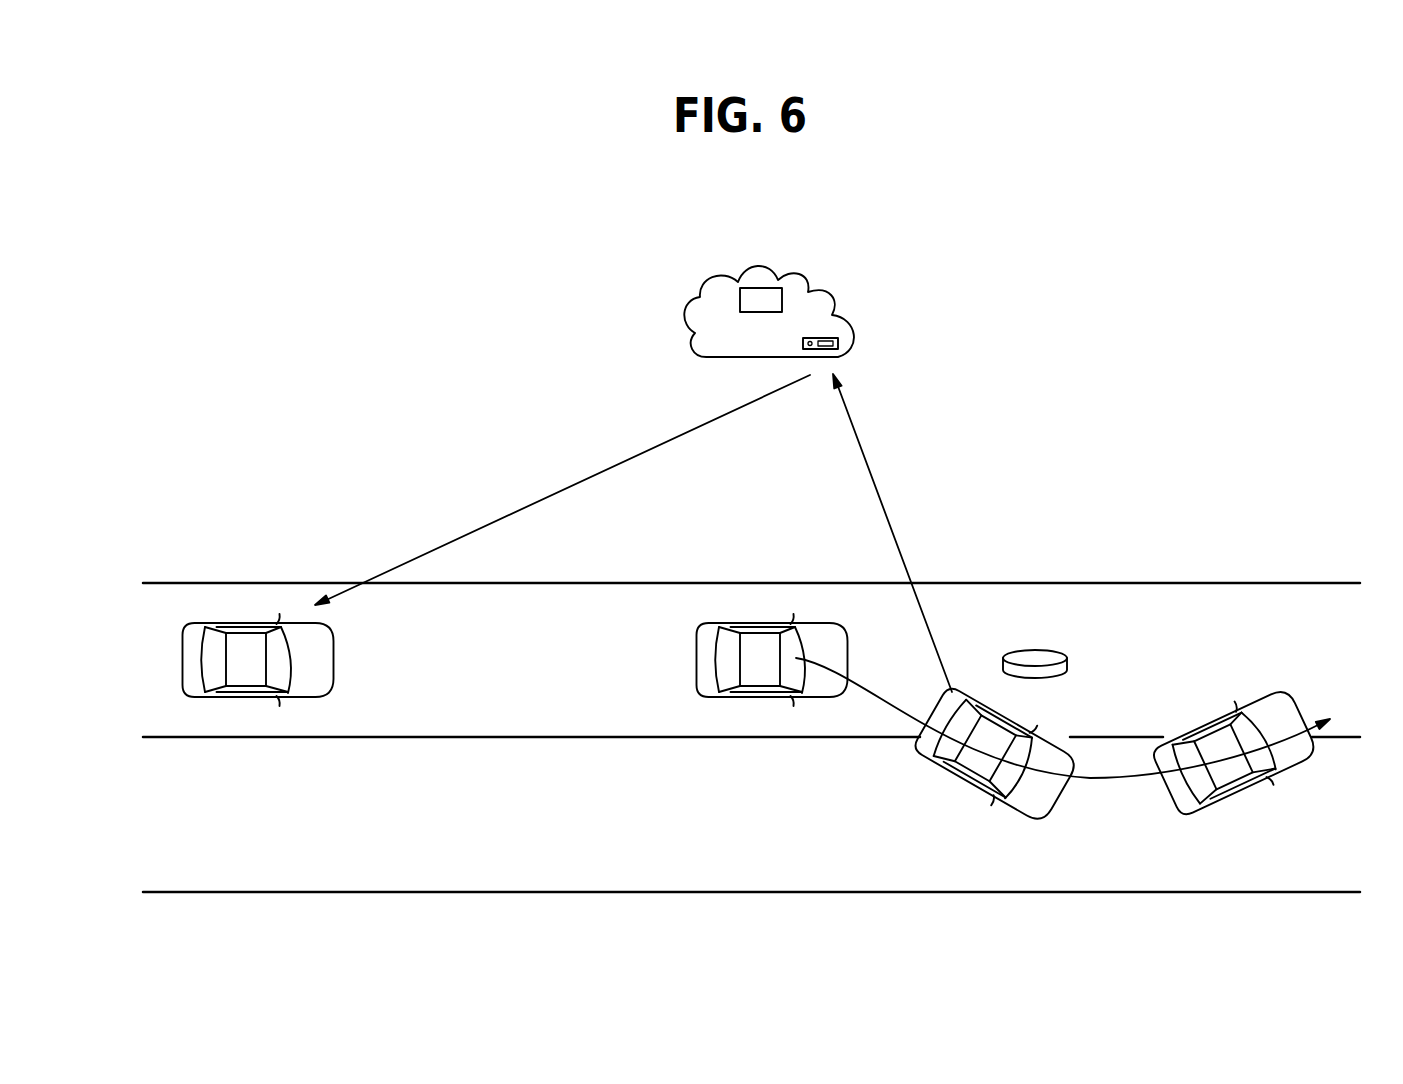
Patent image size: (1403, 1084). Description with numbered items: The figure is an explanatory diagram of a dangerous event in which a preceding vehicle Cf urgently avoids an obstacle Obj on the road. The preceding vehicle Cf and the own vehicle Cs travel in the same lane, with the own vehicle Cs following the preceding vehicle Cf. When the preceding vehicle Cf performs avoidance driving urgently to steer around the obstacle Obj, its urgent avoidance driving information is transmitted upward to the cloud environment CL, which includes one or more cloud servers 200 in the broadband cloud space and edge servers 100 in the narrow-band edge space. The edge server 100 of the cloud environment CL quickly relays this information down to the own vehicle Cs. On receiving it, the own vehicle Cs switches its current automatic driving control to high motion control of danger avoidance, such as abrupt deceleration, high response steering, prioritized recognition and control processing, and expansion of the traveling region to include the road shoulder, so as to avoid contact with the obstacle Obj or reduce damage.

The cloud environment CL is at (683, 308).
The cloud server 200 is at (780, 288).
The edge server 100 is at (840, 343).
The own vehicle Cs is at (240, 622).
The preceding vehicle Cf is at (757, 622).
The obstacle Obj is at (1033, 650).